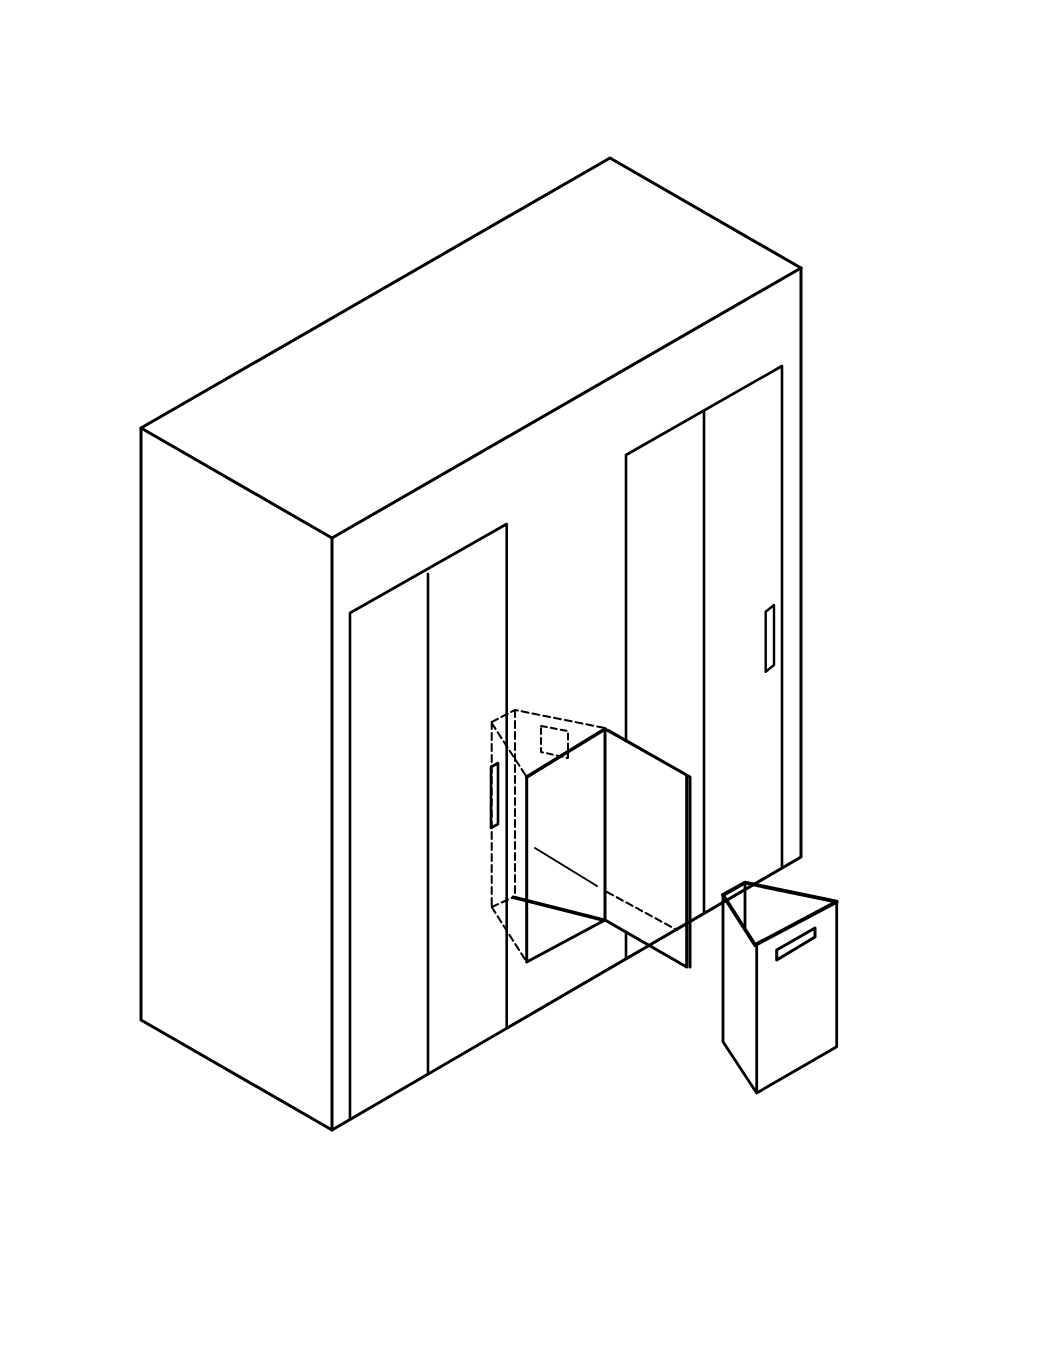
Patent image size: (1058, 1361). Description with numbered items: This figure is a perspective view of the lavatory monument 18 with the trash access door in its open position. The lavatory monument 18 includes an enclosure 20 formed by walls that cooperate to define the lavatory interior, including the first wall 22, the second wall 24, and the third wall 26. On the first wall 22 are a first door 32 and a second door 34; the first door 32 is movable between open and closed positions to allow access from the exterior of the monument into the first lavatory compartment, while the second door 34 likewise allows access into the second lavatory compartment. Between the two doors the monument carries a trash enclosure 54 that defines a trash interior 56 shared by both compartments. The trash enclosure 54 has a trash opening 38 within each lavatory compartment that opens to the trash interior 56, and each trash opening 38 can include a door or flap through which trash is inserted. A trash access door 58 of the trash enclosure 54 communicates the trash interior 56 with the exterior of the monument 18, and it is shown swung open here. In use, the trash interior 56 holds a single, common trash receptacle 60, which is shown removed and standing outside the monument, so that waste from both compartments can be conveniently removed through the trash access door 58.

The lavatory monument 18 is at (777, 134).
The enclosure 20 is at (313, 368).
The first wall 22 is at (776, 328).
The second wall 24 is at (178, 765).
The third wall 26 is at (802, 565).
The first door 32 is at (385, 1062).
The second door 34 is at (753, 439).
The trash opening 38 is at (568, 755).
The trash enclosure 54 is at (592, 813).
The trash interior 56 is at (541, 934).
The trash access door 58 is at (673, 790).
The trash receptacle 60 is at (820, 1042).